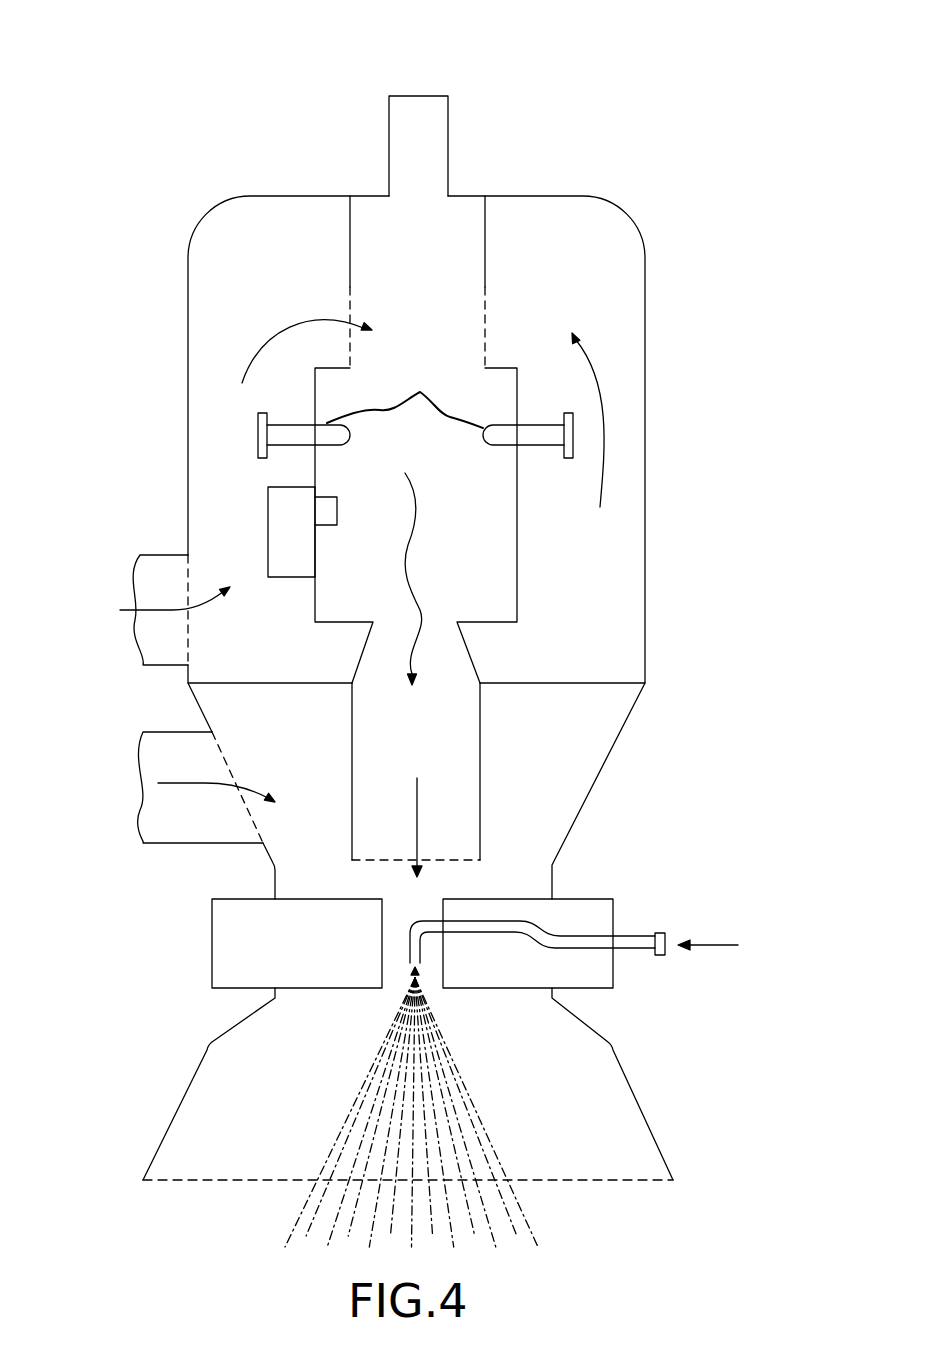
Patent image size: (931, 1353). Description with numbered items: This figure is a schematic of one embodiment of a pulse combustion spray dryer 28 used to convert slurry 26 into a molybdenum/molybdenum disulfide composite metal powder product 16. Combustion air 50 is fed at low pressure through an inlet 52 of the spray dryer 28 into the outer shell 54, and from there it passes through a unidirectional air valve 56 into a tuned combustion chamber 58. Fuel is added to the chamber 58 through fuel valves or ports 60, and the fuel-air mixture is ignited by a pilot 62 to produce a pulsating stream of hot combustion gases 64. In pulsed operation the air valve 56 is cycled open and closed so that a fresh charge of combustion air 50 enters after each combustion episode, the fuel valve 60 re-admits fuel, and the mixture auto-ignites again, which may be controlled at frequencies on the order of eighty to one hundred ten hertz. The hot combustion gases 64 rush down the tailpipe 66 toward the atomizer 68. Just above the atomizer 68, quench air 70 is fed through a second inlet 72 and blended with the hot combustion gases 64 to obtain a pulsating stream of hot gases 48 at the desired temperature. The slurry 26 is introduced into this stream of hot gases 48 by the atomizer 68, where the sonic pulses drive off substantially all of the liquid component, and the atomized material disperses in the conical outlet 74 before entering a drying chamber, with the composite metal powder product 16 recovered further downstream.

The pulse combustion spray dryer 28 is at (96, 97).
The outer shell 54 is at (197, 231).
The unidirectional air valve 56 is at (487, 272).
The tuned combustion chamber 58 is at (428, 330).
The combustion air 50 is at (278, 327).
The fuel valves or ports 60 is at (415, 409).
The pilot 62 is at (333, 498).
The hot combustion gases 64 is at (423, 580).
The inlet 52 is at (140, 660).
The tailpipe 66 is at (349, 720).
The stream of hot gases 48 is at (417, 820).
The quench air 70 is at (187, 785).
The inlet 72 is at (180, 843).
The atomizer 68 is at (420, 918).
The slurry 26 is at (718, 945).
The conical outlet 74 is at (170, 1125).
The composite metal powder product 16 is at (512, 1198).